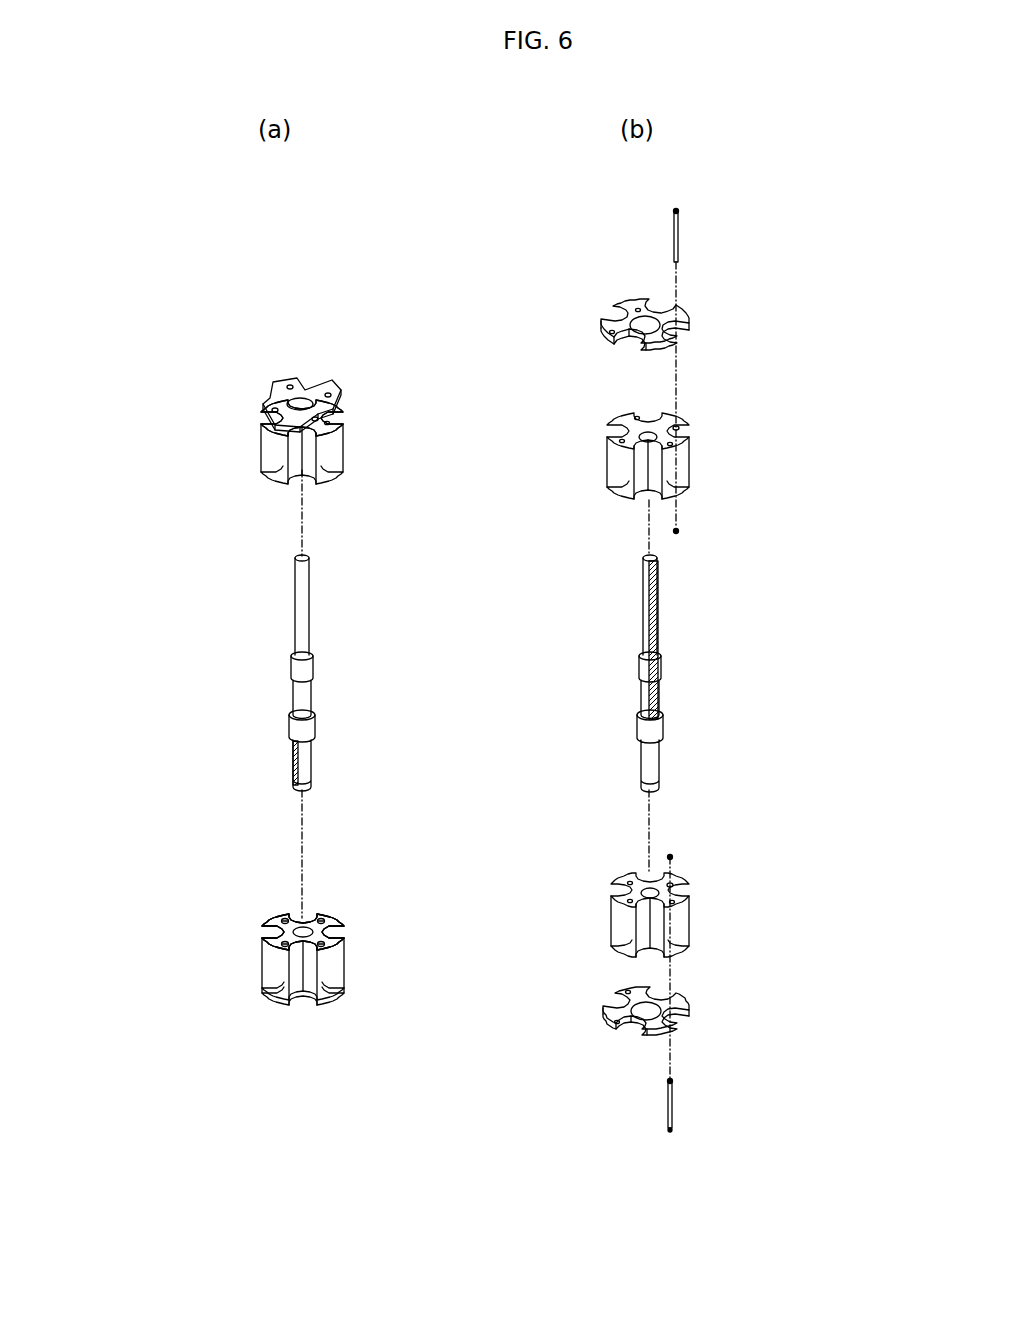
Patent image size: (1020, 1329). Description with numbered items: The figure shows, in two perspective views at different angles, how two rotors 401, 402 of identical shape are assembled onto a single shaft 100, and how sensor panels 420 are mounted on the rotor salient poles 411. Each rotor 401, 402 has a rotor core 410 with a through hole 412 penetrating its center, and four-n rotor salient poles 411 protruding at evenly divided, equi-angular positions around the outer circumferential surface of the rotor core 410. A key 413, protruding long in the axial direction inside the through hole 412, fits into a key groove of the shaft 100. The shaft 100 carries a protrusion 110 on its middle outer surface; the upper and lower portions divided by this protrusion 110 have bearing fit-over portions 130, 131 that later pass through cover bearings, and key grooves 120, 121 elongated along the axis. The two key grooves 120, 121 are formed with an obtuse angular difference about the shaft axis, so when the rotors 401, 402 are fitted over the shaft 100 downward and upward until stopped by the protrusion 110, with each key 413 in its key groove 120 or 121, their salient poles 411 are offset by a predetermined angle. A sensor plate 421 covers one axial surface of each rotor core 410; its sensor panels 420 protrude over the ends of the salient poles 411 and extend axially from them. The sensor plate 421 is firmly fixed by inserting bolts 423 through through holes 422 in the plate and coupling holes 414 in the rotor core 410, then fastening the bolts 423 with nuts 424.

The shaft 100 is at (433, 674).
The protrusion 110 is at (637, 720).
The key groove 120 is at (659, 697).
The key groove 121 is at (296, 762).
The bearing fit-over portion 130 is at (640, 776).
The bearing fit-over portion 131 is at (637, 662).
The rotor 401 is at (236, 418).
The rotor 402 is at (218, 957).
The rotor core 410 is at (302, 455).
The rotor salient pole 411 is at (262, 432).
The through hole 412 is at (301, 398).
The key 413 is at (313, 402).
The coupling hole 414 is at (690, 427).
The sensor panel 420 is at (286, 384).
The sensor plate 421 is at (278, 398).
The through hole 422 is at (668, 334).
The bolt 423 is at (681, 234).
The nut 424 is at (682, 532).